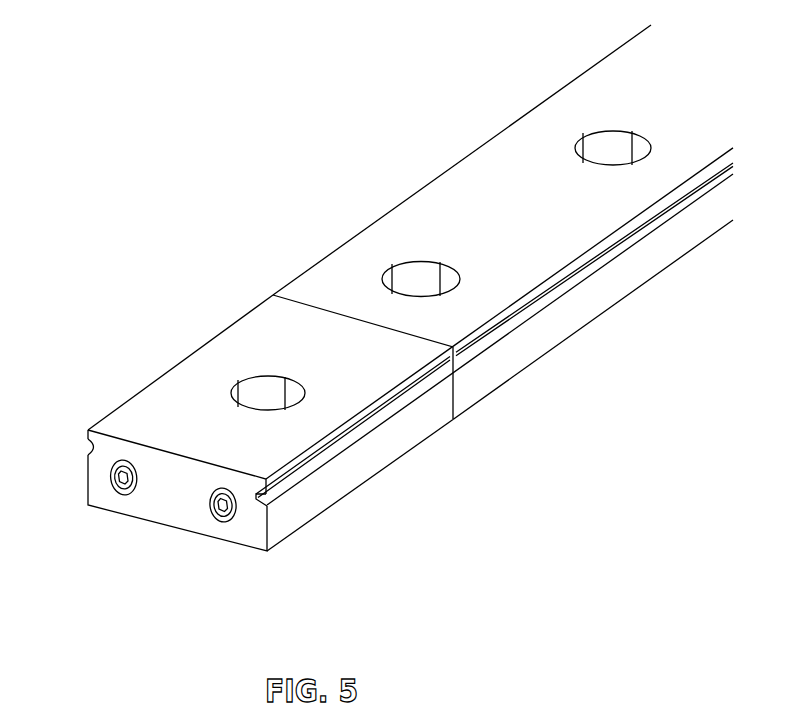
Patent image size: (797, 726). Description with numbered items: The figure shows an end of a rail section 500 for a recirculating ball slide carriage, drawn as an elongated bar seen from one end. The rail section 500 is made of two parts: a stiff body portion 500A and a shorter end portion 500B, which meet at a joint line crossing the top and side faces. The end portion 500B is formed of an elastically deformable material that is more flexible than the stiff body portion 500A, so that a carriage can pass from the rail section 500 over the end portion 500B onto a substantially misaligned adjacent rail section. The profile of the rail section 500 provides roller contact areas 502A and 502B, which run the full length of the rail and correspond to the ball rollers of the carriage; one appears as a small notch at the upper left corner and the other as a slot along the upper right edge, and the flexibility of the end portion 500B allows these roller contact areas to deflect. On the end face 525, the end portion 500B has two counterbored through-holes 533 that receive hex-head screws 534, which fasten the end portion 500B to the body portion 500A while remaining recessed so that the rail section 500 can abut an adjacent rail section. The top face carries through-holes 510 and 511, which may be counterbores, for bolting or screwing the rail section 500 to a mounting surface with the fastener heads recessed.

The rail section 500 is at (375, 309).
The stiff body portion 500A is at (557, 210).
The end portion 500B is at (394, 373).
The roller contact area 502A is at (72, 447).
The roller contact area 502B is at (522, 331).
The through-hole 510 is at (627, 159).
The through-hole 511 is at (282, 404).
The end face 525 is at (190, 503).
The through-hole 533 is at (223, 523).
The hex-head screw 534 is at (223, 488).